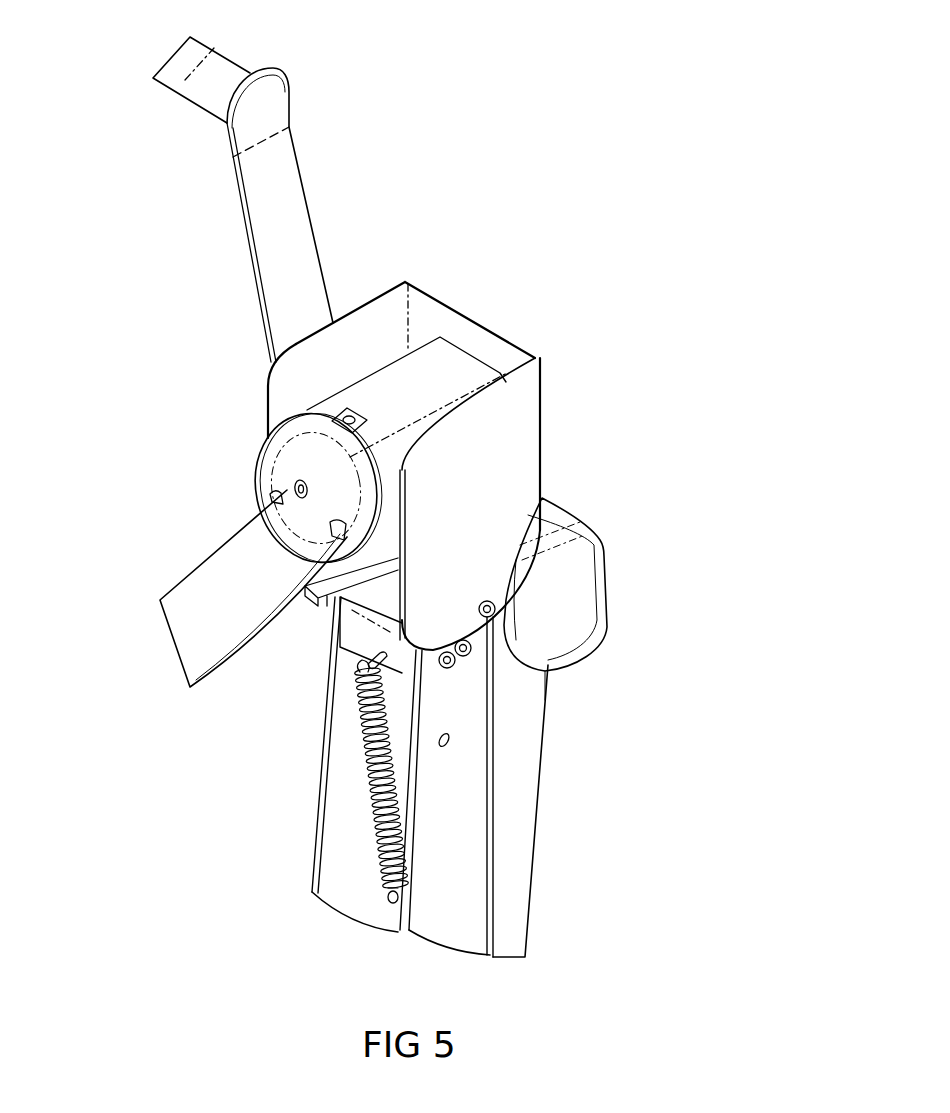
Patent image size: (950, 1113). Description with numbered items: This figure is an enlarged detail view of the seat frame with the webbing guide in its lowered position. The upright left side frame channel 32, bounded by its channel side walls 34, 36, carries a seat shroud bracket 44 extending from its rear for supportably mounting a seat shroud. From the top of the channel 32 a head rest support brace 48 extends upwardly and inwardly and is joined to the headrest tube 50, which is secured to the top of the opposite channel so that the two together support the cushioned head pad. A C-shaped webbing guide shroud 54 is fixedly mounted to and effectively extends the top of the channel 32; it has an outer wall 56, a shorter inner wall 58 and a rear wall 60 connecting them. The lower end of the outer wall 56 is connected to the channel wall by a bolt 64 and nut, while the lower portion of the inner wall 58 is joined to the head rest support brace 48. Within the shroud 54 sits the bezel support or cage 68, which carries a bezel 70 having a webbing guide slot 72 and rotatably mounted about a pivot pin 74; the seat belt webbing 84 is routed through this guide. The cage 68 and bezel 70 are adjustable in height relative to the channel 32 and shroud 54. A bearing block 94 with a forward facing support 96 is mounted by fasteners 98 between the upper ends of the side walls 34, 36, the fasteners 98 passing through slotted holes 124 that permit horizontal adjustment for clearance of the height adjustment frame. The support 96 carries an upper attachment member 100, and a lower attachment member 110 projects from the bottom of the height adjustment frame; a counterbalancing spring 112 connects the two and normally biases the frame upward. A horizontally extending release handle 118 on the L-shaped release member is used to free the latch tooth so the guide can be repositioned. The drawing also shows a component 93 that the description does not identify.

The channel 32 is at (492, 867).
The channel side wall 34 is at (334, 859).
The channel side wall 36 is at (456, 825).
The seat shroud bracket 44 is at (524, 750).
The head rest support brace 48 is at (290, 186).
The headrest tube 50 is at (219, 72).
The webbing guide shroud 54 is at (558, 440).
The outer wall 56 is at (512, 418).
The inner wall 58 is at (383, 330).
The rear wall 60 is at (468, 330).
The bolt 64 is at (522, 596).
The bezel support or cage 68 is at (433, 364).
The bezel 70 is at (291, 450).
The webbing guide slot 72 is at (277, 497).
The pivot pin 74 is at (298, 486).
The seat belt webbing 84 is at (189, 606).
The side bracket 93 is at (586, 626).
The bearing block 94 is at (406, 591).
The forward facing support 96 is at (397, 650).
The fasteners 98 is at (488, 600).
The attachment member 100 is at (358, 657).
The attachment member 110 is at (391, 900).
The counterbalancing spring 112 is at (366, 775).
The release handle 118 is at (318, 590).
The slotted holes 124 is at (447, 665).